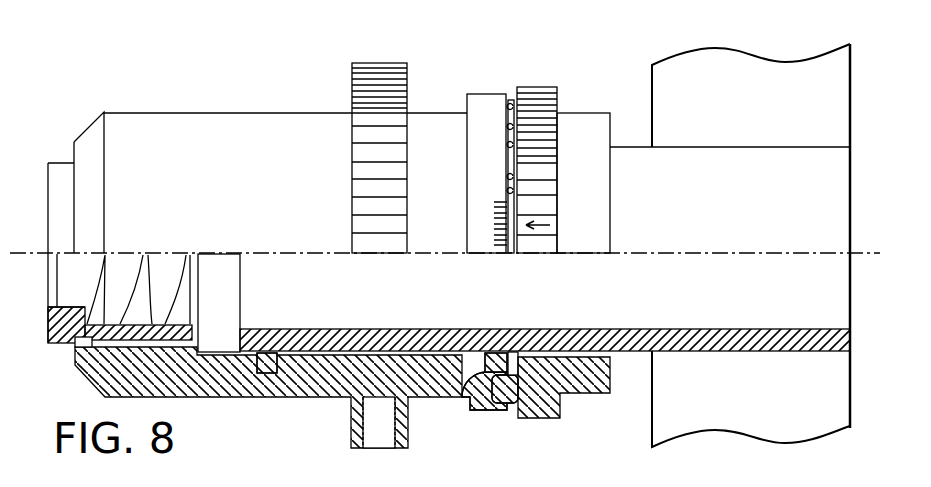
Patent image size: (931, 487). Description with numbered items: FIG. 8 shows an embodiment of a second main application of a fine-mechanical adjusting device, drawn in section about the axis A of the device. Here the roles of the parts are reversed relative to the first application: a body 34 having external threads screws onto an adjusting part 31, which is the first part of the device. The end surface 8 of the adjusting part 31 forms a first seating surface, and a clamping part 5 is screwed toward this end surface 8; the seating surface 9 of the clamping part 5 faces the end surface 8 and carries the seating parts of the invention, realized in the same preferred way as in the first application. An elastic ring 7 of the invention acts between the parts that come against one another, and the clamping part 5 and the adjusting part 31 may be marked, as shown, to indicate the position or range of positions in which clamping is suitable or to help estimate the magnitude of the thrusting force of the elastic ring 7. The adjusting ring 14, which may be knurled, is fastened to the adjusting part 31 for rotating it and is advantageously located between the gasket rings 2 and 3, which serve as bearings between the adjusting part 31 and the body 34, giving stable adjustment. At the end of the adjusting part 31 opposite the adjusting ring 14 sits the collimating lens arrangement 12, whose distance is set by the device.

The collimating lens arrangement 12 is at (62, 163).
The adjusting part 31 is at (230, 112).
The adjusting ring 14 is at (380, 62).
The end surface 8 is at (504, 112).
The seating surface 9 is at (527, 92).
The clamping part 5 is at (580, 113).
The axis A is at (878, 250).
The body 34 is at (647, 352).
The gasket ring 2 is at (256, 356).
The gasket ring 3 is at (475, 382).
The elastic ring 7 is at (488, 403).